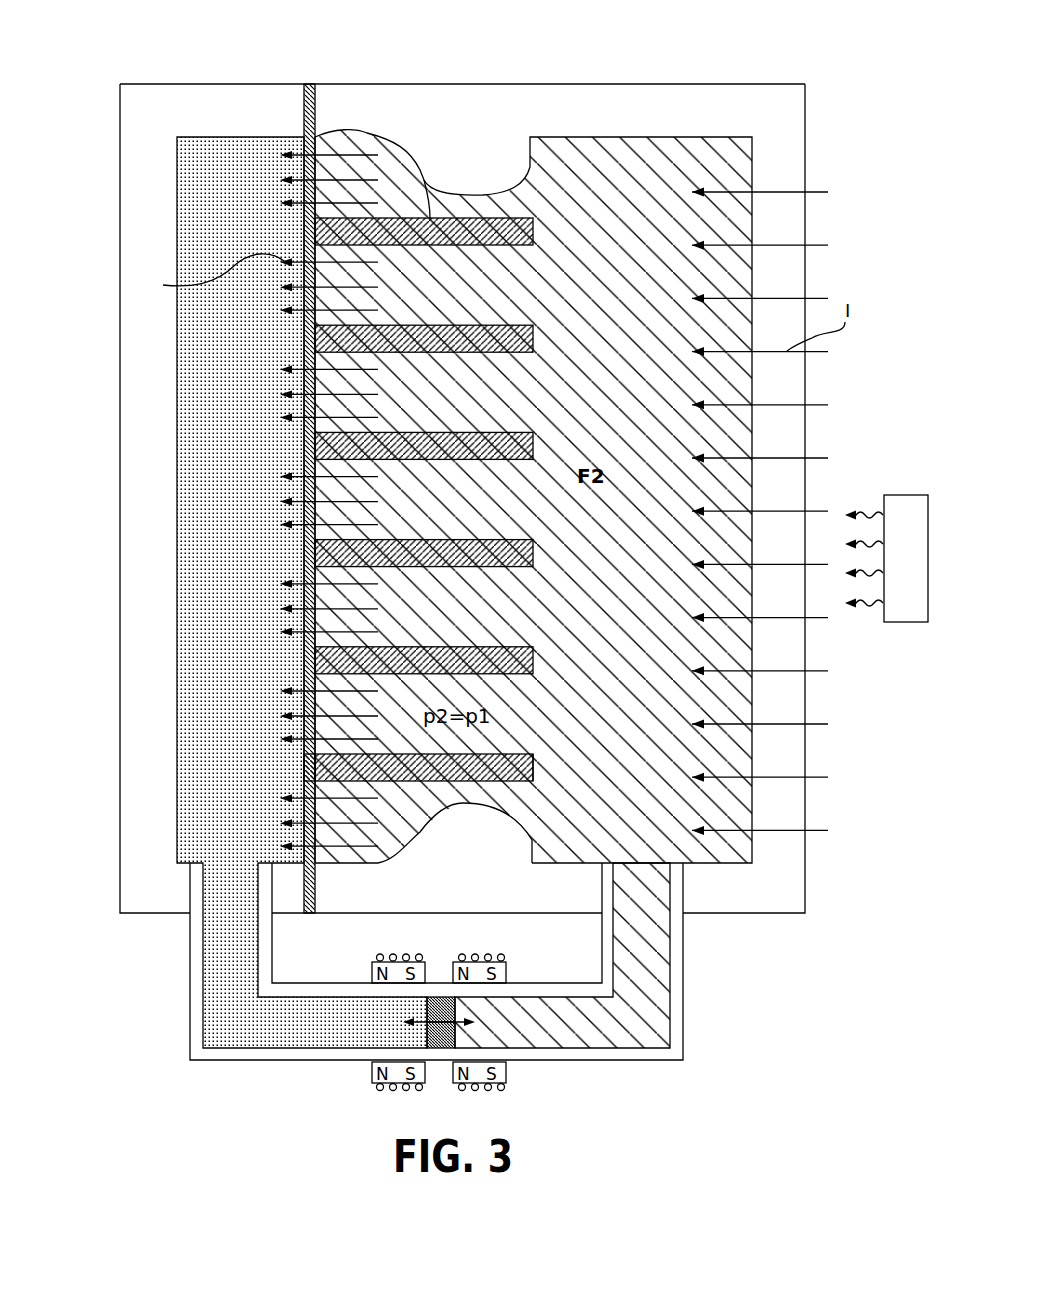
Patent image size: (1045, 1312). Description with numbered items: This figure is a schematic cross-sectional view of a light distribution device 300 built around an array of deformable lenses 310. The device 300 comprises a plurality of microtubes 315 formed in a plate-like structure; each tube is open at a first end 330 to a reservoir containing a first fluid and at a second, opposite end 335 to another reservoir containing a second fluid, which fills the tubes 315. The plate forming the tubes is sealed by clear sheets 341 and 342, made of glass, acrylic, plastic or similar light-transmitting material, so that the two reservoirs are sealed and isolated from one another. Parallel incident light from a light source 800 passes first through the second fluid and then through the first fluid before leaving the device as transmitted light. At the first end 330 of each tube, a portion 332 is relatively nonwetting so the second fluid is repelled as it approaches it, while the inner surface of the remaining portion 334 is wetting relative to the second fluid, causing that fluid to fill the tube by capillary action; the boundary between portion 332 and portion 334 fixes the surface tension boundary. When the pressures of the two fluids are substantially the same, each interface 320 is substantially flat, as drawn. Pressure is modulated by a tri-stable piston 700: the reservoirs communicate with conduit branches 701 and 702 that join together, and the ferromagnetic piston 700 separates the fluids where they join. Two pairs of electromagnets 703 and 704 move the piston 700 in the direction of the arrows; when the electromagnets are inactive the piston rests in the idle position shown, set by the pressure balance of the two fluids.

The light distribution device 300 is at (703, 62).
The deformable lenses 310 is at (265, 632).
The microtubes 315 is at (430, 218).
The interface 320 is at (283, 365).
The first end 330 is at (304, 758).
The nonwetting portion 332 is at (304, 767).
The remaining portion 334 is at (442, 782).
The second end 335 is at (533, 768).
The clear sheet 341 is at (120, 237).
The clear sheet 342 is at (805, 115).
The tri-stable piston 700 is at (437, 1050).
The conduit branch 701 is at (190, 953).
The conduit branch 702 is at (683, 947).
The pair of electromagnets 703 is at (398, 957).
The pair of electromagnets 704 is at (478, 957).
The light source 800 is at (914, 541).